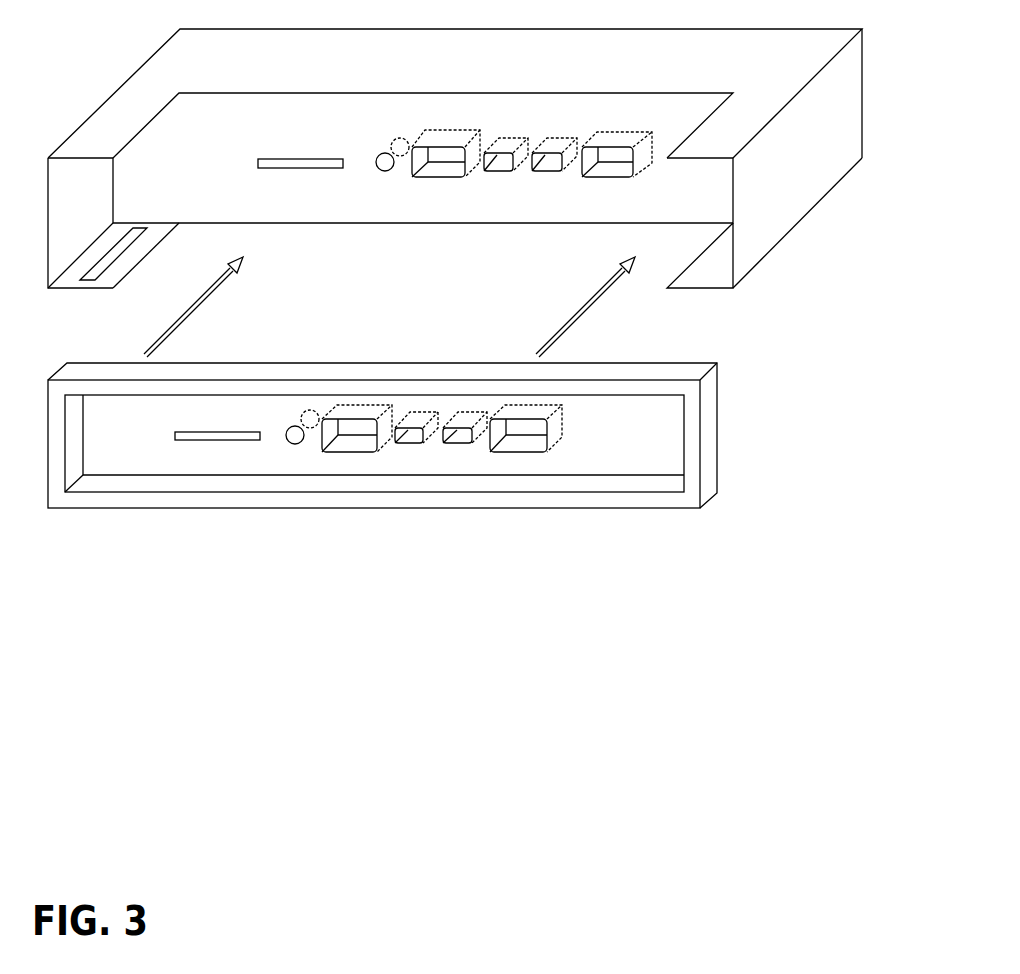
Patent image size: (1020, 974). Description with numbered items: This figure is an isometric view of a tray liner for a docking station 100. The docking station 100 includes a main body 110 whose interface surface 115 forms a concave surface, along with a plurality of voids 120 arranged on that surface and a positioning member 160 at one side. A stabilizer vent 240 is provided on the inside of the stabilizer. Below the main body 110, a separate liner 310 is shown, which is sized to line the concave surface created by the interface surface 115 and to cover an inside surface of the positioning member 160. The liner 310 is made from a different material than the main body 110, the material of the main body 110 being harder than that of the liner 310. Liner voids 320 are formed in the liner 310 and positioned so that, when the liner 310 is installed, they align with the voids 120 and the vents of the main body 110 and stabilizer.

The docking station 100 is at (797, 255).
The main body 110 is at (260, 225).
The interface surface 115 is at (201, 148).
The voids 120 is at (607, 177).
The positioning member 160 is at (80, 128).
The stabilizer vent 240 is at (97, 278).
The liner 310 is at (308, 395).
The liner voids 320 is at (517, 452).